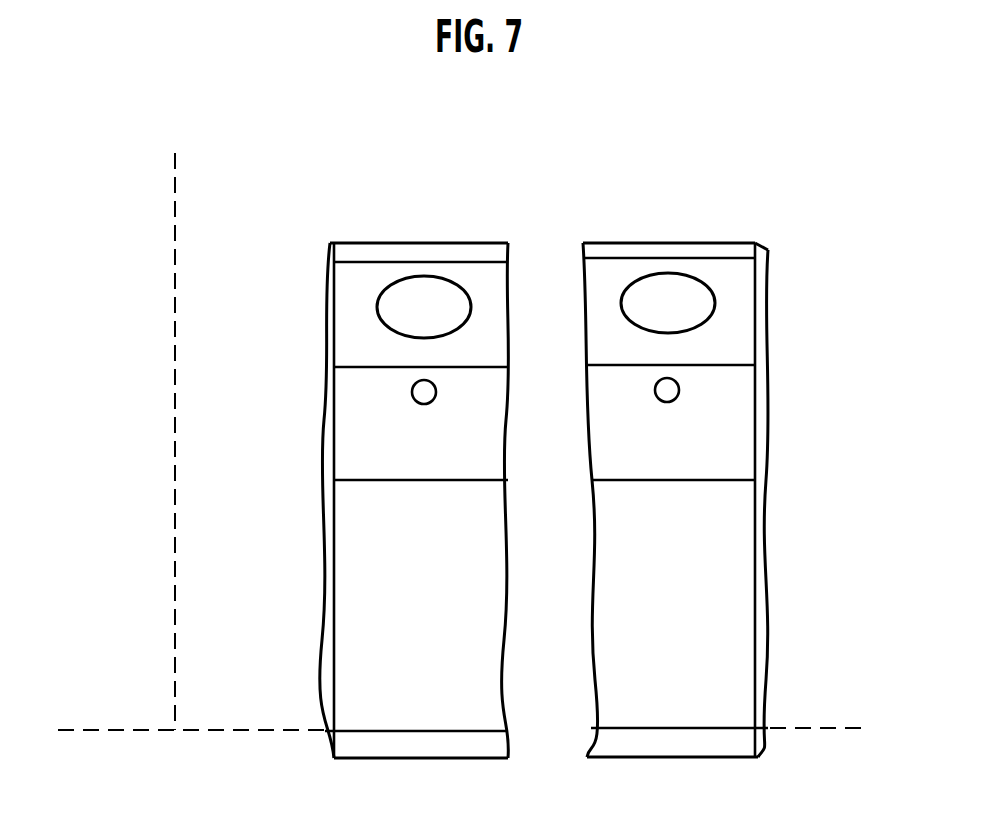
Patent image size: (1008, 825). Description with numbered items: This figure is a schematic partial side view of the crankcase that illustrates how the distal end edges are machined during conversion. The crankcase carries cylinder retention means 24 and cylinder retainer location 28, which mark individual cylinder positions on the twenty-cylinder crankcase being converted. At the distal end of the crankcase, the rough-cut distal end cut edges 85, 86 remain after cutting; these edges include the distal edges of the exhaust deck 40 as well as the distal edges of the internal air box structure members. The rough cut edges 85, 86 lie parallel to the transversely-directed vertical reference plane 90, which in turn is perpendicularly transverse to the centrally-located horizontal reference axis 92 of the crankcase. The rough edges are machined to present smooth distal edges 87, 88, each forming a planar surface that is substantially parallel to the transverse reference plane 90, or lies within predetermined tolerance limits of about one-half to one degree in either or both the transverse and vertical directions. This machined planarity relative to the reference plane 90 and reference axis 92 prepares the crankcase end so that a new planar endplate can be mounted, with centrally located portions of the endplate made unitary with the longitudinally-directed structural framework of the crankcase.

The exhaust deck 40 is at (682, 246).
The rough-cut distal end cut edge 85 is at (326, 288).
The rough-cut distal end cut edge 86 is at (760, 287).
The smooth distal edge 87 is at (336, 433).
The smooth distal edge 88 is at (752, 428).
The transversely-directed vertical reference plane 90 is at (184, 471).
The centrally-located horizontal reference axis 92 is at (262, 726).
The cylinder retention means 24 is at (668, 303).
The cylinder retainer location 28 is at (424, 307).